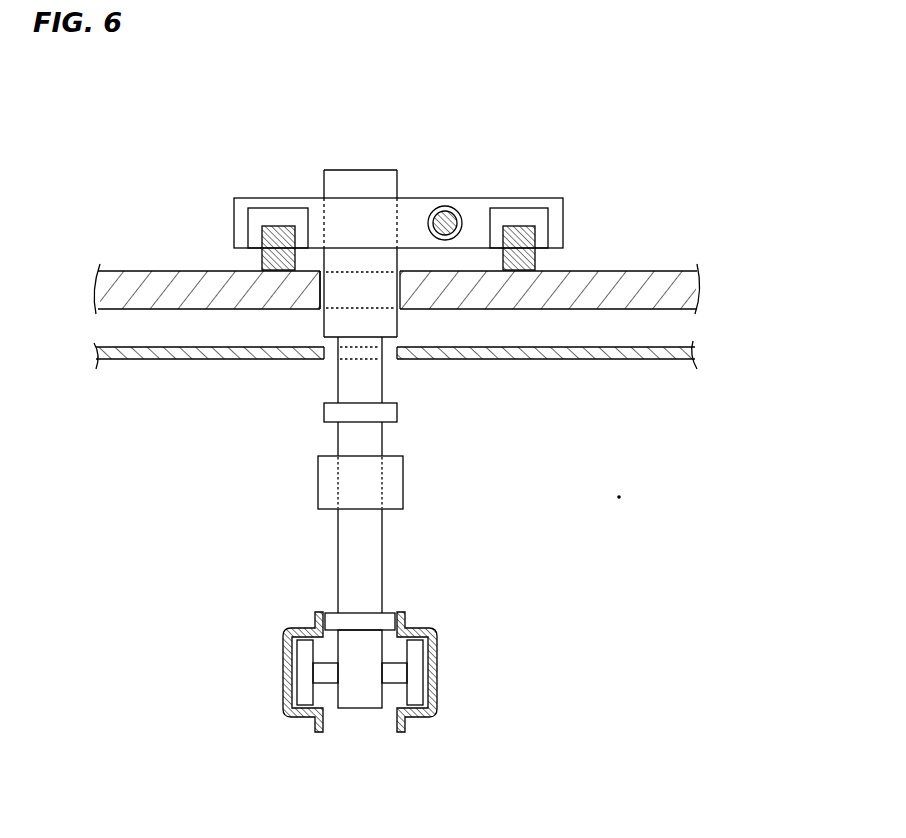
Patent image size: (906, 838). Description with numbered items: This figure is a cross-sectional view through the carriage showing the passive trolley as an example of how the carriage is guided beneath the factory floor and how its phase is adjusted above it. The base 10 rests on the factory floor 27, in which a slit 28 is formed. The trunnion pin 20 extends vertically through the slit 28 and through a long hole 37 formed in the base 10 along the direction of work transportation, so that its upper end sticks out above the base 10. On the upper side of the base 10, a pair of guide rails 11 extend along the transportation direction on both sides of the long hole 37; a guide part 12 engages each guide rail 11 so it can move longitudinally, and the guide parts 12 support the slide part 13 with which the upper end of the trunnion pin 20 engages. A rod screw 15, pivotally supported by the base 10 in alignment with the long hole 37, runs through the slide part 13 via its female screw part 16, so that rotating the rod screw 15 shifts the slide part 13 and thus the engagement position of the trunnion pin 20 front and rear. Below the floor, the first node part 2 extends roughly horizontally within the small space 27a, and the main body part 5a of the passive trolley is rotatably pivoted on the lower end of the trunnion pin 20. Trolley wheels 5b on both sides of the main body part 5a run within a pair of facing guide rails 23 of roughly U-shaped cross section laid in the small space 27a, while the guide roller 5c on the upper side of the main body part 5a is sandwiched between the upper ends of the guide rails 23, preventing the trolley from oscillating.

The first node part 2 is at (325, 478).
The main body part 5a is at (357, 700).
The trolley wheel 5b is at (303, 683).
The guide roller 5c is at (388, 612).
The base 10 is at (643, 277).
The guide rail 11 is at (270, 242).
The guide part 12 is at (268, 213).
The slide part 13 is at (553, 203).
The rod screw 15 is at (450, 217).
The female screw part 16 is at (430, 217).
The trunnion pin 20 is at (362, 185).
The guide rail 23 is at (283, 655).
The factory floor 27 is at (663, 348).
The small space 27a is at (619, 497).
The slit 28 is at (393, 359).
The long hole 37 is at (340, 298).